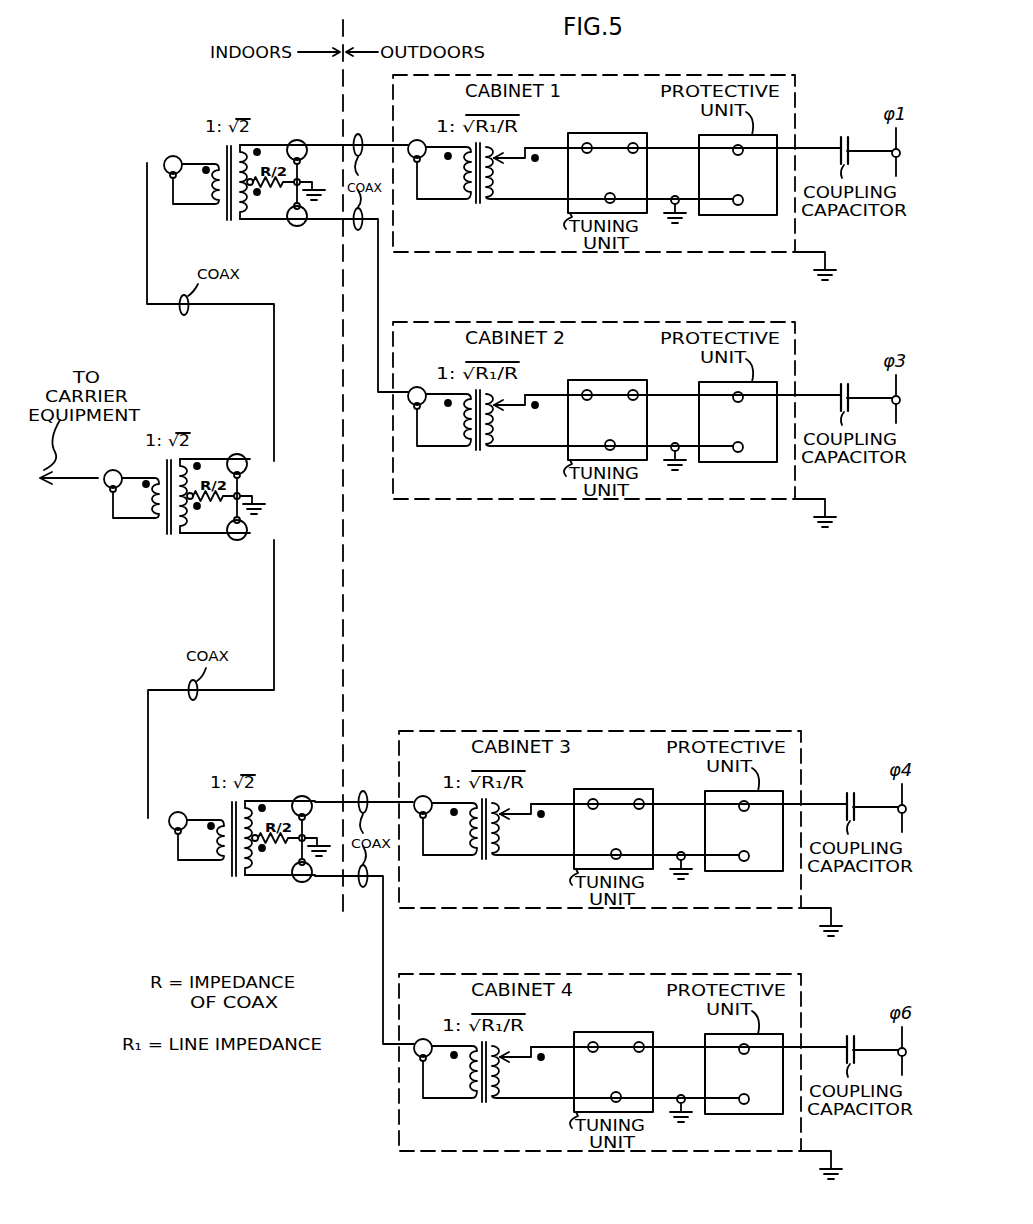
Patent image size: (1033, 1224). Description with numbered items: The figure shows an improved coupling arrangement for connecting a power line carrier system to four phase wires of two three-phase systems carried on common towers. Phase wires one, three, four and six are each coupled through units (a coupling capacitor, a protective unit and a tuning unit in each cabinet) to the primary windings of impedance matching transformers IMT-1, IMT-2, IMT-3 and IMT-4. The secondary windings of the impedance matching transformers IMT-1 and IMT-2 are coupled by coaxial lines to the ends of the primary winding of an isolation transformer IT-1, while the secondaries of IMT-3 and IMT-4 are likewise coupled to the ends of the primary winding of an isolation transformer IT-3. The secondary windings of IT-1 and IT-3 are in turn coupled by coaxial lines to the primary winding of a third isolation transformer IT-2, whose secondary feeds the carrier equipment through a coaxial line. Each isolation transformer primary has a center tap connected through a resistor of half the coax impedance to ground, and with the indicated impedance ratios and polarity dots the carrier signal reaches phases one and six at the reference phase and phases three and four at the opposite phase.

The isolation transformer IT-1 is at (244, 180).
The isolation transformer IT-2 is at (184, 497).
The isolation transformer IT-3 is at (249, 837).
The impedance matching transformer IMT-1 is at (473, 181).
The impedance matching transformer IMT-2 is at (473, 428).
The impedance matching transformer IMT-3 is at (479, 837).
The impedance matching transformer IMT-4 is at (479, 1080).